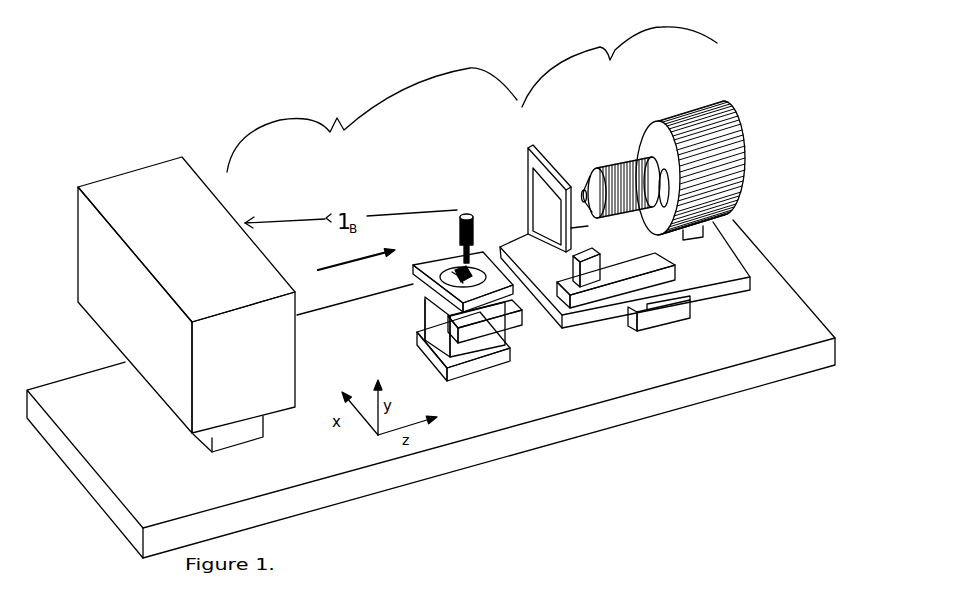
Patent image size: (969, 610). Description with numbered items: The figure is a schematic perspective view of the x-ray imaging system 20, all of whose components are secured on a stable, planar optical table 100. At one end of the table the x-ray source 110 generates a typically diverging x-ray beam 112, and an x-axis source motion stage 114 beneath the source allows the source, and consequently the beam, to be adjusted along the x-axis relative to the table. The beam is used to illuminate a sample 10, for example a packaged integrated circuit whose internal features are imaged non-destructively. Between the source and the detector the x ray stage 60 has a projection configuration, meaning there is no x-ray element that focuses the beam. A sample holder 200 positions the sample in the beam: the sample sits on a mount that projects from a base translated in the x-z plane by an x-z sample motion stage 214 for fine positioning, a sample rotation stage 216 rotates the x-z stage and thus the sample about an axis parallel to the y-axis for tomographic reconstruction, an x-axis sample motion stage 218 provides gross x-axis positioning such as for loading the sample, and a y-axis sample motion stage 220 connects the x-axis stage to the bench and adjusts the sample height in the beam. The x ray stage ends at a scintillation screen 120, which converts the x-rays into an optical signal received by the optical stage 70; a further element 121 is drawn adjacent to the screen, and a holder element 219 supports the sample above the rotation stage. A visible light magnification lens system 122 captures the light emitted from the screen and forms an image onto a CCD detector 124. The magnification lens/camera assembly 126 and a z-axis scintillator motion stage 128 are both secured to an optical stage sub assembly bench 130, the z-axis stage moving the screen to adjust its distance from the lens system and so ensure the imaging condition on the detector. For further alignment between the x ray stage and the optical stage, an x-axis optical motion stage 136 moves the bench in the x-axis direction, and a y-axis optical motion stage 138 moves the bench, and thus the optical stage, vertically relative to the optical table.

The sample 10 is at (518, 208).
The x-ray imaging system 20 is at (509, 481).
The x ray stage 60 is at (372, 120).
The optical stage 70 is at (619, 62).
The optical table 100 is at (250, 501).
The x-ray source 110 is at (269, 372).
The x-ray beam 112 is at (350, 256).
The x-axis source motion stage 114 is at (262, 434).
The scintillation screen 120 is at (522, 165).
The screen holder 121 is at (574, 230).
The visible light magnification lens system 122 is at (605, 167).
The CCD detector 124 is at (720, 157).
The magnification lens/camera assembly 126 is at (753, 207).
The z-axis scintillator motion stage 128 is at (677, 275).
The optical stage sub assembly bench 130 is at (750, 280).
The x-axis optical motion stage 136 is at (706, 296).
The y-axis optical motion stage 138 is at (678, 320).
The sample holder 200 is at (474, 385).
The x-z sample motion stage 214 is at (455, 270).
The sample rotation stage 216 is at (440, 274).
The x-axis sample motion stage 218 is at (500, 288).
The sample holder 219 is at (478, 248).
The y-axis sample motion stage 220 is at (432, 318).